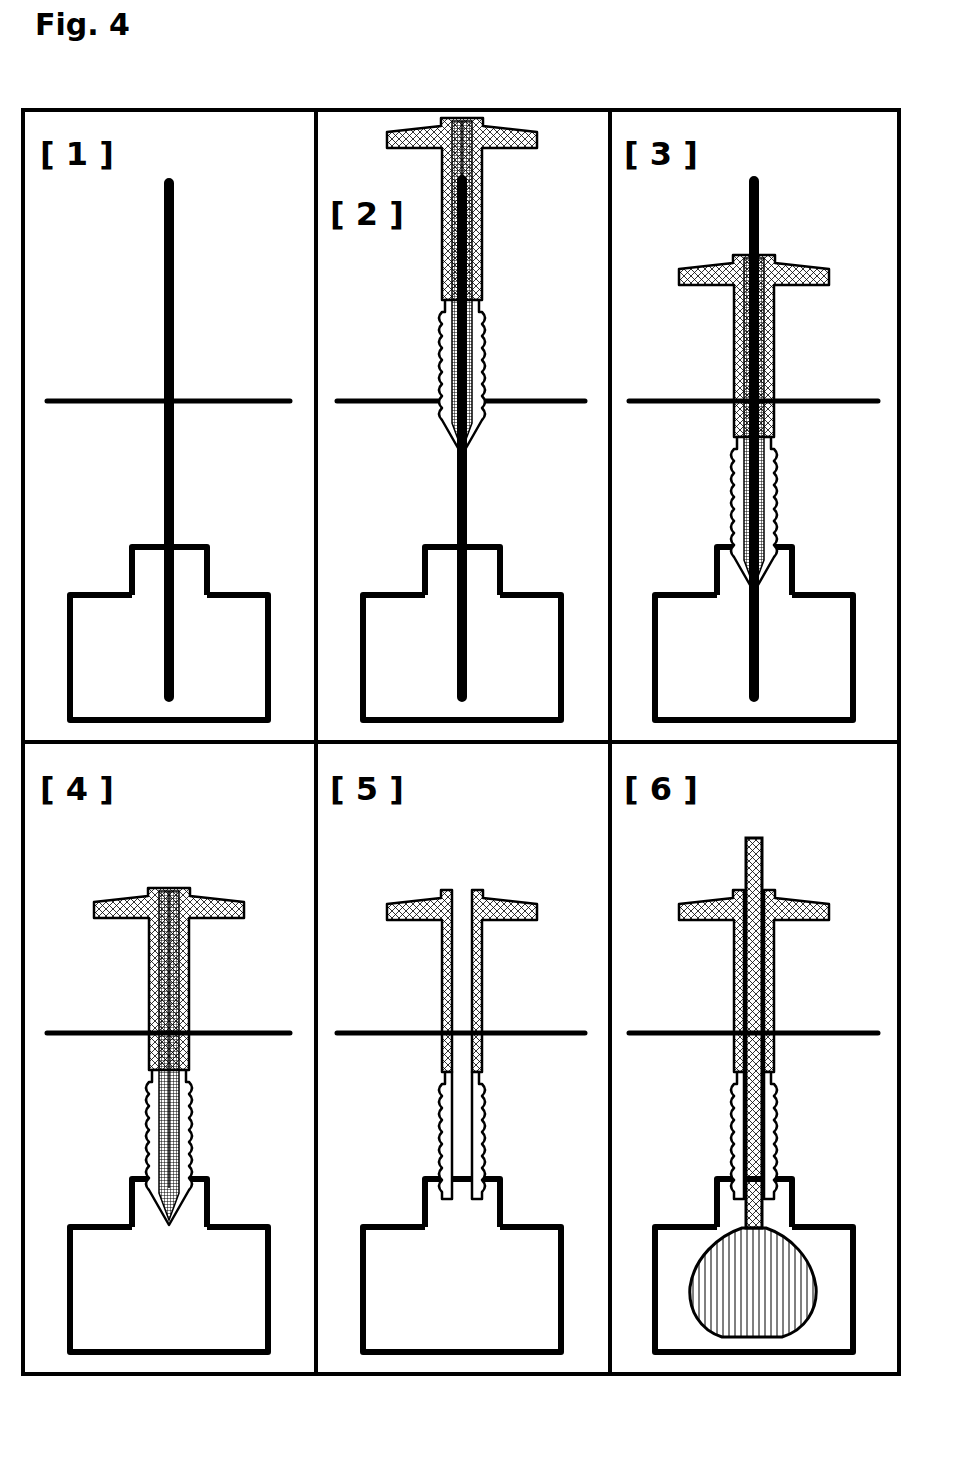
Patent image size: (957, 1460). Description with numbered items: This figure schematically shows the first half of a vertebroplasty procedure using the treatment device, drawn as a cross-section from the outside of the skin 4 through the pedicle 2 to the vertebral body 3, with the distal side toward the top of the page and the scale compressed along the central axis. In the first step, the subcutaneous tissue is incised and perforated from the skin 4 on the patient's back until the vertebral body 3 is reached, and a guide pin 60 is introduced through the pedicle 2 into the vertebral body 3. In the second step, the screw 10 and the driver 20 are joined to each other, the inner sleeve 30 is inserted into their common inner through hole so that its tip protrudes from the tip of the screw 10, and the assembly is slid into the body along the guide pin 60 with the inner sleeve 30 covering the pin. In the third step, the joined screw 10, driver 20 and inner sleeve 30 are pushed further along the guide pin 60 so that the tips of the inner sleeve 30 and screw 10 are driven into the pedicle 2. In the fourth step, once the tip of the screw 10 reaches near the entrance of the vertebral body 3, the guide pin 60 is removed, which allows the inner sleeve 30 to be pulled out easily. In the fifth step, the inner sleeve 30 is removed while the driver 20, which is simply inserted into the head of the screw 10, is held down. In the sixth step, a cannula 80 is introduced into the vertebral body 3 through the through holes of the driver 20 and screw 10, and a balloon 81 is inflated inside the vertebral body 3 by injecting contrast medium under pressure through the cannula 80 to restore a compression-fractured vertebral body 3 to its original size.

The pedicle 2 is at (141, 572).
The vertebral body 3 is at (111, 617).
The skin 4 is at (90, 404).
The screw 10 is at (470, 342).
The driver 20 is at (478, 285).
The inner sleeve 30 is at (467, 245).
The guide pin 60 is at (164, 287).
The cannula 80 is at (762, 862).
The balloon 81 is at (812, 1262).